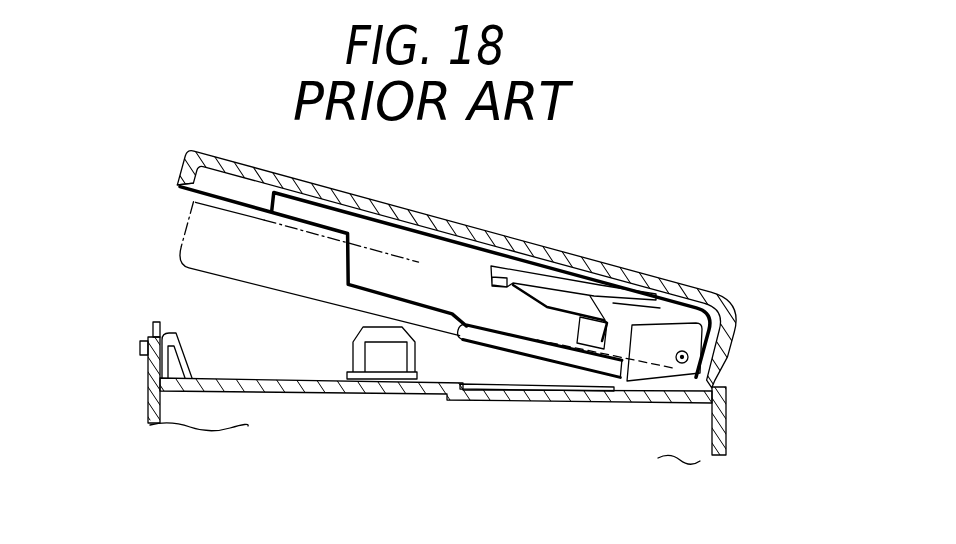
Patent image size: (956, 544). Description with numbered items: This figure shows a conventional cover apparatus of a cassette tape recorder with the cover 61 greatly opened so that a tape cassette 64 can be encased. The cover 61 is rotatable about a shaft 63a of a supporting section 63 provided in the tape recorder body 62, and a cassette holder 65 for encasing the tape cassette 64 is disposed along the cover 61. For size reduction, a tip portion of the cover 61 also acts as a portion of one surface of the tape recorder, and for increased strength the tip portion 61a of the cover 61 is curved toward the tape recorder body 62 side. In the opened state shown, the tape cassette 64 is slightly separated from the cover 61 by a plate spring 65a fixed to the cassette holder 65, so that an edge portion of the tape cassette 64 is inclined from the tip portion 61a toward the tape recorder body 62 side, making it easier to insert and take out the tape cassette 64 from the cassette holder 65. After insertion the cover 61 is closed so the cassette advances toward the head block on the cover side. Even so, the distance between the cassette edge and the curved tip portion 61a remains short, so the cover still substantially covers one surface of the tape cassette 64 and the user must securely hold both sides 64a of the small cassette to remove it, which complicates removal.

The cover 61 is at (473, 224).
The tip portion 61a is at (183, 158).
The tape recorder body 62 is at (148, 400).
The supporting section 63 is at (648, 386).
The shaft 63a is at (680, 392).
The tape cassette 64 is at (182, 253).
The sides 64a is at (265, 262).
The cassette holder 65 is at (550, 277).
The plate spring 65a is at (617, 284).